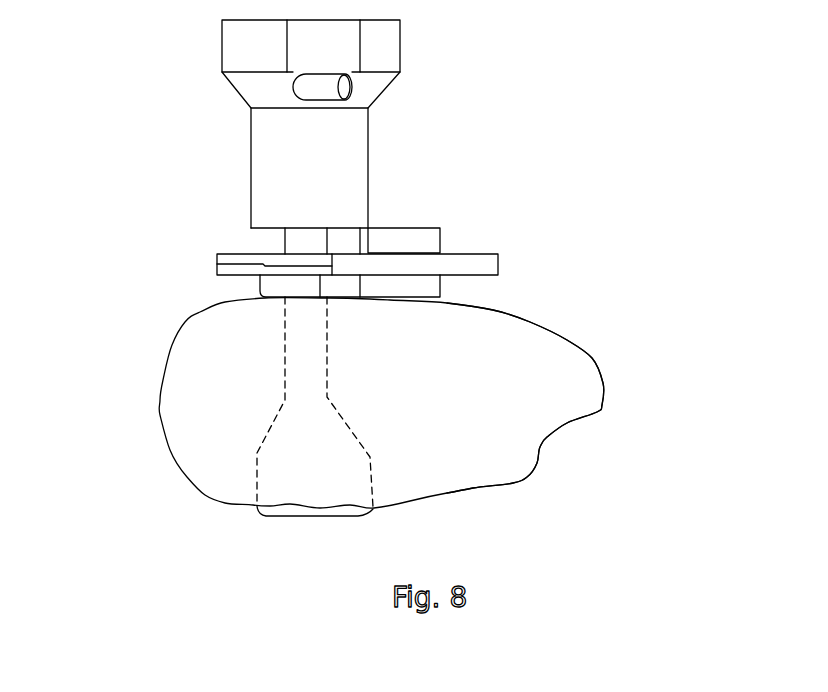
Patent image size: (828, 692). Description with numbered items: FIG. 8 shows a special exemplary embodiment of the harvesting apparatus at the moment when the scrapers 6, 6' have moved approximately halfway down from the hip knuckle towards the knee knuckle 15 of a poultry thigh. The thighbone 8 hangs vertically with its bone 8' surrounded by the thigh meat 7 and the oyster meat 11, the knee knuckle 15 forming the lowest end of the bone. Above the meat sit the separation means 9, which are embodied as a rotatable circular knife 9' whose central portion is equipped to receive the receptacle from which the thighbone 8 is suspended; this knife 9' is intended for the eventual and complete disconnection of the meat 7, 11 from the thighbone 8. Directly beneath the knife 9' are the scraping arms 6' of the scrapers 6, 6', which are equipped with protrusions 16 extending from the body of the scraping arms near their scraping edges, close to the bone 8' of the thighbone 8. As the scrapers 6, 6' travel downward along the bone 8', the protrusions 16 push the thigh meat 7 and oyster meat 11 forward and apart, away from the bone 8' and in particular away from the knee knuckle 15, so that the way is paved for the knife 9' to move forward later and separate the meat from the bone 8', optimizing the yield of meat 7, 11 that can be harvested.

The separation means 9 is at (339, 124).
The knife 9' is at (248, 211).
The scraper 6 is at (433, 245).
The scraping arm 6' is at (503, 245).
The protrusions 16 is at (258, 287).
The thigh meat 7 is at (562, 370).
The oyster meat 11 is at (602, 398).
The thighbone 8 is at (373, 402).
The bone 8' is at (191, 400).
The knee knuckle 15 is at (278, 517).